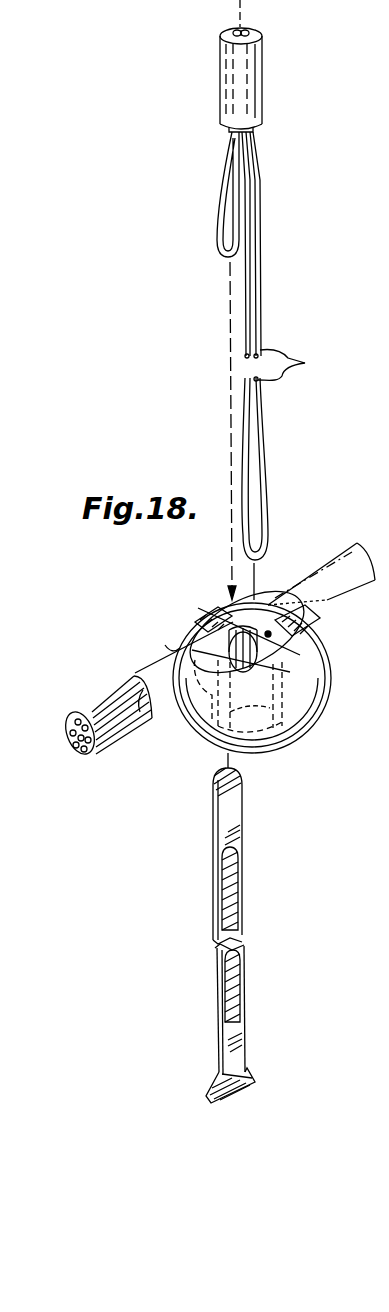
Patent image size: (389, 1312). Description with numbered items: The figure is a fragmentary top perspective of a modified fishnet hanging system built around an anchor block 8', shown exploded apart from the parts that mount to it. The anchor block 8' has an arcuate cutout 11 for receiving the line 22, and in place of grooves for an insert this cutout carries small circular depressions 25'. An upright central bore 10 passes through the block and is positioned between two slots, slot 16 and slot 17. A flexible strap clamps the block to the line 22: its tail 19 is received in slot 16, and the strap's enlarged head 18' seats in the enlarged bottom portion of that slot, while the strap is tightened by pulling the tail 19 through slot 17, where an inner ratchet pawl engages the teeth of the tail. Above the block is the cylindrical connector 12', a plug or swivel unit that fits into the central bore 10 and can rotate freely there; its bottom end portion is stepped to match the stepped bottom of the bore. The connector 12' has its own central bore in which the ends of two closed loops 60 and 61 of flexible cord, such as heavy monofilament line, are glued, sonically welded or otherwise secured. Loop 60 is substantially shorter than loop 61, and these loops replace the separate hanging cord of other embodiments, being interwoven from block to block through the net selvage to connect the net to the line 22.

The connector 12' is at (267, 80).
The loop 60 is at (217, 226).
The loop 61 is at (305, 363).
The slot 16 is at (226, 606).
The central bore 10 is at (200, 622).
The arcuate cutout 11 is at (268, 630).
The circular depressions 25' is at (250, 608).
The anchor block 8' is at (275, 678).
The slot 17 is at (322, 693).
The line 22 is at (106, 698).
The strap tail 19 is at (235, 806).
The enlarged head 18' is at (250, 1033).